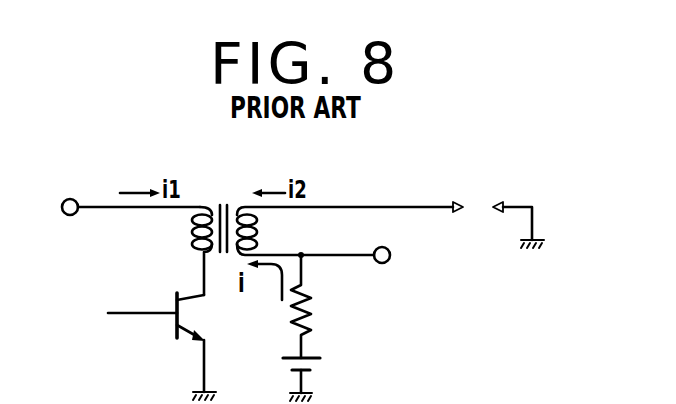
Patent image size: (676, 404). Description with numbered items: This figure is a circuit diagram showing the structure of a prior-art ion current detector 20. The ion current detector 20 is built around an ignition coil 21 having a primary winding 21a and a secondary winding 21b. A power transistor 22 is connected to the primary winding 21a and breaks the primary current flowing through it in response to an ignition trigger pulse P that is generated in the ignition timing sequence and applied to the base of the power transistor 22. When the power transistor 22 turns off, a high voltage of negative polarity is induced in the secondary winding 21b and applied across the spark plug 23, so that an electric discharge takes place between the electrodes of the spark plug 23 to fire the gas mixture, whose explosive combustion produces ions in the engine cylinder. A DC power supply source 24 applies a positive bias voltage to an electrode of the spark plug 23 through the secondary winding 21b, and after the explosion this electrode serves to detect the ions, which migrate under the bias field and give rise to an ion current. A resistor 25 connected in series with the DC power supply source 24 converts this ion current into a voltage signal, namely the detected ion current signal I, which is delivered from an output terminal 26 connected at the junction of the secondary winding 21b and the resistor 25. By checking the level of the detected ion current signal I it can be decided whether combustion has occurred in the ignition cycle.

The ion current detector 20 is at (322, 156).
The ignition coil 21 is at (227, 200).
The primary winding 21a is at (192, 238).
The secondary winding 21b is at (258, 236).
The power transistor 22 is at (177, 305).
The spark plug 23 is at (477, 199).
The DC power supply source 24 is at (322, 366).
The resistor 25 is at (313, 310).
The output terminal 26 is at (391, 256).
The ignition trigger pulse P is at (157, 315).
The detected ion current signal I is at (332, 255).